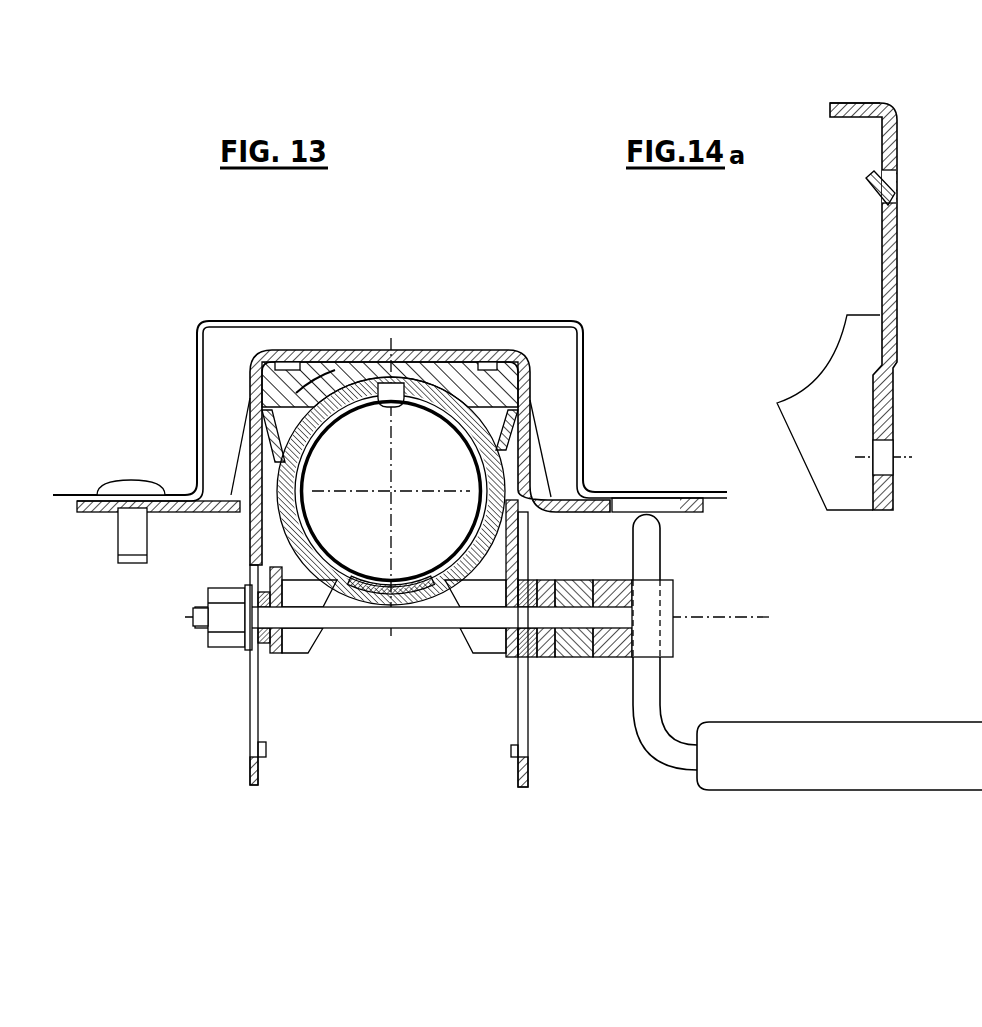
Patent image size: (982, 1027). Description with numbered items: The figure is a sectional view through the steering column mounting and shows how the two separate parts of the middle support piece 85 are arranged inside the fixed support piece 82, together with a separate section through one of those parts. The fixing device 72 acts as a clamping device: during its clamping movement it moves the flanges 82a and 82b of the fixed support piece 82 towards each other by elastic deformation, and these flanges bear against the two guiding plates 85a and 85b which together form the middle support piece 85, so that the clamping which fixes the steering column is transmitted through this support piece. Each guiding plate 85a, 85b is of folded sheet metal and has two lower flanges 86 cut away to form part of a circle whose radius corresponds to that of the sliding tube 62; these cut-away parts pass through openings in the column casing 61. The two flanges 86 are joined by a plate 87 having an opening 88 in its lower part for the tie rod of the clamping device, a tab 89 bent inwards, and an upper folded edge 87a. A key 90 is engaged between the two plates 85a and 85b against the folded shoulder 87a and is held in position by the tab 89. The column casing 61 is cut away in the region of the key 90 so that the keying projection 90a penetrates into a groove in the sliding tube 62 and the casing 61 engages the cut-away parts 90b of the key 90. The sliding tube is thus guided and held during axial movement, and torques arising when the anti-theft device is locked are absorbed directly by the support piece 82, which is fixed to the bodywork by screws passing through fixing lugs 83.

In FIG. 13, the fixed support piece 82 is at (262, 360).
In FIG. 13, the flange of the fixed support piece 82a is at (517, 773).
In FIG. 13, the flange of the fixed support piece 82b is at (258, 775).
In FIG. 13, the fixing lugs 83 is at (190, 505).
In FIG. 13, the middle support piece 85 is at (330, 632).
In FIG. 13, the guiding plate 85a is at (483, 647).
In FIG. 13, the guiding plate 85b is at (295, 647).
In FIG. 13, the plate 87 is at (523, 455).
In FIG. 14A, the plate 87 is at (885, 240).
In FIG. 13, the upper folded edge 87a is at (492, 360).
In FIG. 14A, the upper folded edge 87a is at (853, 103).
In FIG. 13, the tab 89 is at (510, 413).
In FIG. 14A, the tab 89 is at (870, 183).
In FIG. 13, the key 90 is at (433, 377).
In FIG. 13, the keying projection 90a is at (383, 397).
In FIG. 13, the cut-away parts 90b is at (347, 390).
In FIG. 13, the column casing 61 is at (480, 555).
In FIG. 13, the sliding tube 62 is at (475, 518).
In FIG. 13, the fixing device 72 is at (678, 594).
In FIG. 14A, the lower flanges 86 is at (836, 430).
In FIG. 14A, the opening 88 is at (882, 452).